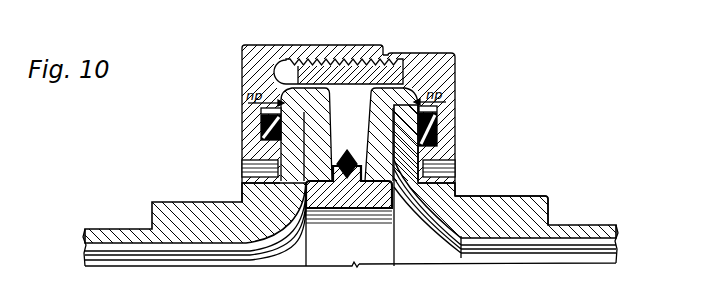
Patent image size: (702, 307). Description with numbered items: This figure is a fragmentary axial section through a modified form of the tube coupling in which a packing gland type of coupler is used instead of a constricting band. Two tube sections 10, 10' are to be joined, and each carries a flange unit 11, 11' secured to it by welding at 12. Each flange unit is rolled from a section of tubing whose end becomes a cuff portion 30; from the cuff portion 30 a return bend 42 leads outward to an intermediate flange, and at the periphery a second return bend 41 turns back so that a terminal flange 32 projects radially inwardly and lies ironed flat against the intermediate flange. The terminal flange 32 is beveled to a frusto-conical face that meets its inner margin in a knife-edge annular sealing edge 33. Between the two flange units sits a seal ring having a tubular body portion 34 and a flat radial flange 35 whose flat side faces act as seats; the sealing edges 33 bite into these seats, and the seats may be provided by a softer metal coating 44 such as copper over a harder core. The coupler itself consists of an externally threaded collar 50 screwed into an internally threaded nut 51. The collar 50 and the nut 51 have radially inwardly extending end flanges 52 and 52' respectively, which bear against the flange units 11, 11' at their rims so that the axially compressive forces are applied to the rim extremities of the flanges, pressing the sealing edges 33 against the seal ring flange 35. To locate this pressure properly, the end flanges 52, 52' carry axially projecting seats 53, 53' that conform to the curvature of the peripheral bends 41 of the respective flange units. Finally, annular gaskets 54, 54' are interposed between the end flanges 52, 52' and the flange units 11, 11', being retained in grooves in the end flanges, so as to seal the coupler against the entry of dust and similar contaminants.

The tube section 10 is at (488, 216).
The tube section 10' is at (221, 229).
The flange unit 11 is at (479, 171).
The flange unit 11' is at (215, 189).
The weld 12 is at (506, 219).
The cuff portion 30 is at (537, 196).
The terminal flange 32 is at (328, 114).
The annular sealing edge 33 is at (342, 197).
The tubular body portion 34 is at (377, 204).
The flat radial flange 35 is at (350, 155).
The return bend 41 is at (383, 88).
The return bend 42 is at (242, 172).
The coating 44 is at (326, 210).
The externally threaded collar 50 is at (399, 55).
The internally threaded nut 51 is at (334, 54).
The end flange 52 is at (458, 126).
The end flange 52' is at (237, 123).
The axially projecting seat 53 is at (459, 96).
The axially projecting seat 53' is at (237, 99).
The annular gasket 54 is at (461, 153).
The annular gasket 54' is at (235, 152).